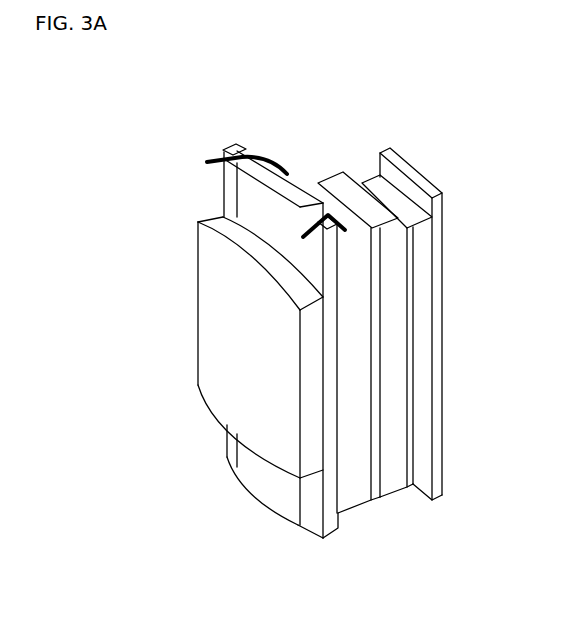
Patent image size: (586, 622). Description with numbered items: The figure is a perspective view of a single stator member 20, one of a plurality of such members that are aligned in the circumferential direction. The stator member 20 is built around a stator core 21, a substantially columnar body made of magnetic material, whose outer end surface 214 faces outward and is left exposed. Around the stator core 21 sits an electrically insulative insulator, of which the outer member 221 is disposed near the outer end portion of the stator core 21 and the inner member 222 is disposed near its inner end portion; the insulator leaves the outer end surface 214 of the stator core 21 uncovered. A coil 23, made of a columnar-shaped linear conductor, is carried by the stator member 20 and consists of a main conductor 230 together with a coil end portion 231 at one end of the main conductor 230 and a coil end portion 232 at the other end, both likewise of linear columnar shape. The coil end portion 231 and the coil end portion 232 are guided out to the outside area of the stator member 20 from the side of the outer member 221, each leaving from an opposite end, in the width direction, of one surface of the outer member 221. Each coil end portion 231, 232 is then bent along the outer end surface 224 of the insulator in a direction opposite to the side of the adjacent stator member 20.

The stator member 20 is at (466, 84).
The stator core 21 is at (212, 292).
The outer end surface 214 is at (217, 360).
The outer end surface of the insulator 224 is at (270, 497).
The outer member 221 is at (330, 522).
The inner member 222 is at (430, 488).
The coil 23 is at (378, 93).
The main conductor 230 is at (337, 180).
The coil end portion 231 is at (332, 213).
The coil end portion 232 is at (260, 152).